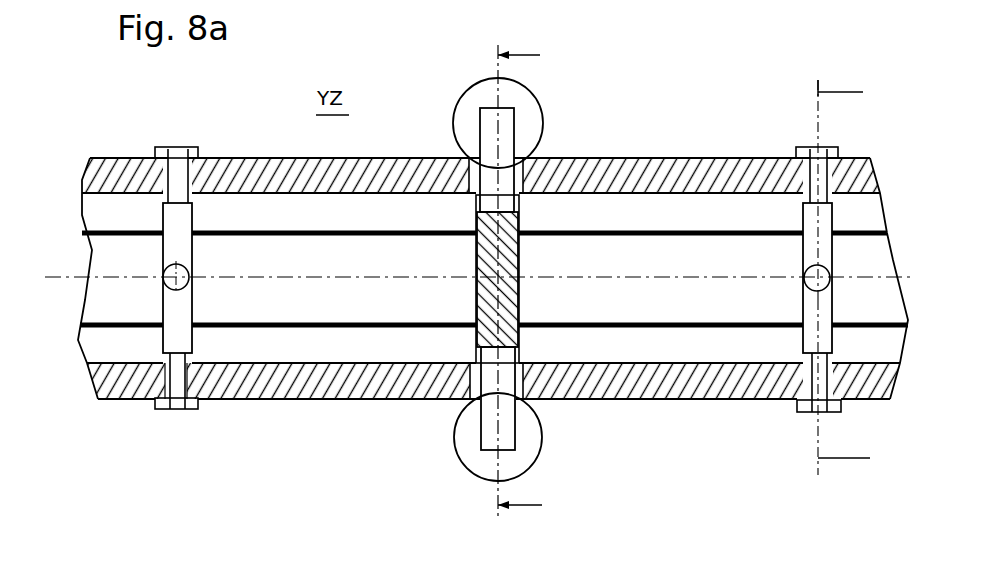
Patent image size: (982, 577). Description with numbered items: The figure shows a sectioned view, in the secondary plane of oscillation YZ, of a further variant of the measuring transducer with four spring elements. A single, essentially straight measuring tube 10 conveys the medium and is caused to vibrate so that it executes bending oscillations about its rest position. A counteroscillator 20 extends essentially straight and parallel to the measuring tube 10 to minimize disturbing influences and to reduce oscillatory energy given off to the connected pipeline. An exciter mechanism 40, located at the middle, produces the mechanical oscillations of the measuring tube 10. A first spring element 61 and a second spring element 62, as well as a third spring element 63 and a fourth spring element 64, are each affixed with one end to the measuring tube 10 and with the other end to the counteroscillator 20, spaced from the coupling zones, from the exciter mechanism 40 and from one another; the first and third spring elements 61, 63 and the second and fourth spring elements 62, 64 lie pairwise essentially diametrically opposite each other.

The measuring tube 10 is at (97, 298).
The counteroscillator 20 is at (283, 390).
The exciter mechanism 40 is at (433, 438).
The first spring element 61 is at (176, 157).
The second spring element 62 is at (808, 152).
The third spring element 63 is at (171, 410).
The fourth spring element 64 is at (808, 405).